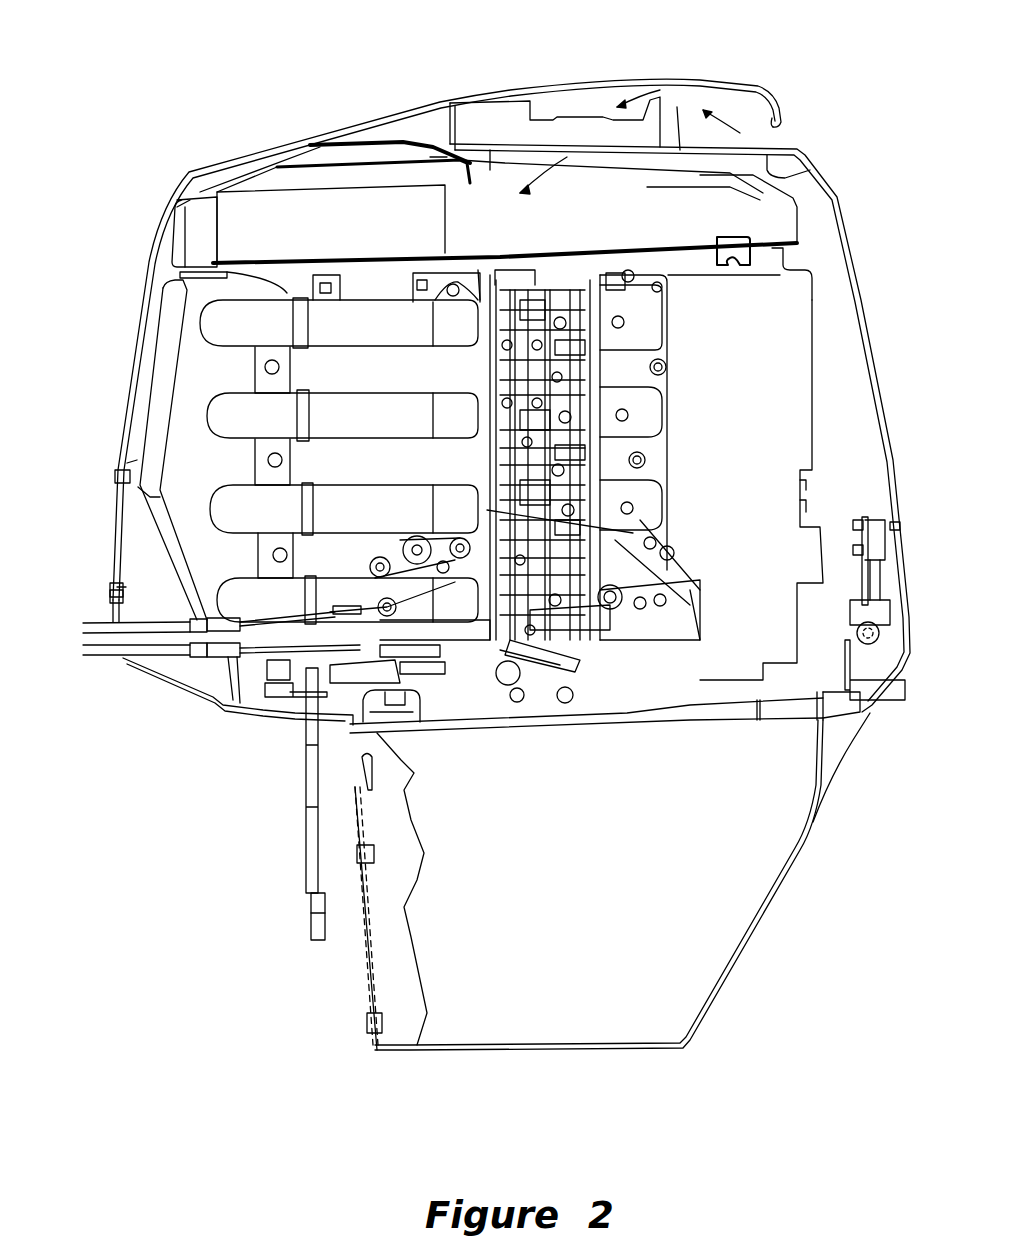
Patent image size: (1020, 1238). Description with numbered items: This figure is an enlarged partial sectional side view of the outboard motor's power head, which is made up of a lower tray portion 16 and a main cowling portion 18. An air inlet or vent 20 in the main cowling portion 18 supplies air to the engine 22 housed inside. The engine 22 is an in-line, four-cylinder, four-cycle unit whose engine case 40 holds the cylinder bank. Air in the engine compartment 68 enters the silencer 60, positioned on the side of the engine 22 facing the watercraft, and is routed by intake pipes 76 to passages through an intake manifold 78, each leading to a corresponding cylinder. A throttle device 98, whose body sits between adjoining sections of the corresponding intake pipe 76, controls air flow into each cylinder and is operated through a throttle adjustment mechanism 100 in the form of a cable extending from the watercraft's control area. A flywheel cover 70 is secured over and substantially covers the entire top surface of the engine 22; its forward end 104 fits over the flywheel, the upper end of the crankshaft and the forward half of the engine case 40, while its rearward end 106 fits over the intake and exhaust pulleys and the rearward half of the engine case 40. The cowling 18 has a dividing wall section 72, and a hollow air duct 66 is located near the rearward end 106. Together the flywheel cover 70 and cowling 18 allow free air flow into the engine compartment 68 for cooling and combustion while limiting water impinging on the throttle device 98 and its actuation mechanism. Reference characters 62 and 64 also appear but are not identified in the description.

The lower tray portion 16 is at (155, 687).
The main cowling portion 18 is at (332, 118).
The air inlet or vent 20 is at (782, 140).
The engine 22 is at (610, 655).
The engine case 40 is at (817, 447).
The silencer 60 is at (150, 418).
The air inlet 62 is at (700, 82).
The intake silencer 64 is at (492, 115).
The hollow air duct 66 is at (590, 132).
The engine compartment 68 is at (830, 256).
The flywheel cover 70 is at (232, 234).
The dividing wall section 72 is at (810, 170).
The intake pipes 76 is at (395, 432).
The intake manifold 78 is at (665, 410).
The throttle device 98 is at (660, 476).
The throttle adjustment mechanism 100 is at (97, 620).
The forward end 104 is at (268, 180).
The rearward end 106 is at (685, 235).